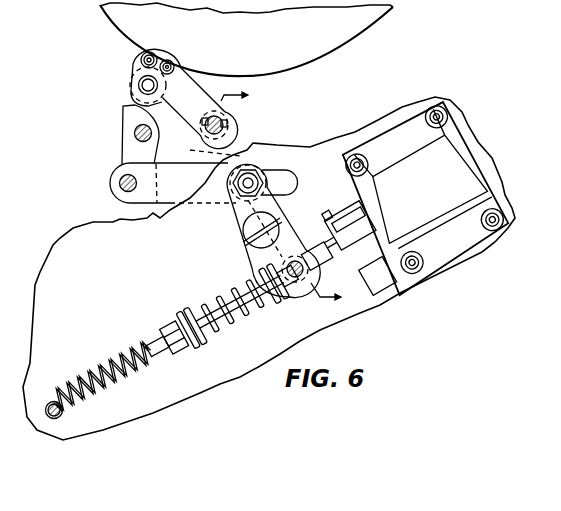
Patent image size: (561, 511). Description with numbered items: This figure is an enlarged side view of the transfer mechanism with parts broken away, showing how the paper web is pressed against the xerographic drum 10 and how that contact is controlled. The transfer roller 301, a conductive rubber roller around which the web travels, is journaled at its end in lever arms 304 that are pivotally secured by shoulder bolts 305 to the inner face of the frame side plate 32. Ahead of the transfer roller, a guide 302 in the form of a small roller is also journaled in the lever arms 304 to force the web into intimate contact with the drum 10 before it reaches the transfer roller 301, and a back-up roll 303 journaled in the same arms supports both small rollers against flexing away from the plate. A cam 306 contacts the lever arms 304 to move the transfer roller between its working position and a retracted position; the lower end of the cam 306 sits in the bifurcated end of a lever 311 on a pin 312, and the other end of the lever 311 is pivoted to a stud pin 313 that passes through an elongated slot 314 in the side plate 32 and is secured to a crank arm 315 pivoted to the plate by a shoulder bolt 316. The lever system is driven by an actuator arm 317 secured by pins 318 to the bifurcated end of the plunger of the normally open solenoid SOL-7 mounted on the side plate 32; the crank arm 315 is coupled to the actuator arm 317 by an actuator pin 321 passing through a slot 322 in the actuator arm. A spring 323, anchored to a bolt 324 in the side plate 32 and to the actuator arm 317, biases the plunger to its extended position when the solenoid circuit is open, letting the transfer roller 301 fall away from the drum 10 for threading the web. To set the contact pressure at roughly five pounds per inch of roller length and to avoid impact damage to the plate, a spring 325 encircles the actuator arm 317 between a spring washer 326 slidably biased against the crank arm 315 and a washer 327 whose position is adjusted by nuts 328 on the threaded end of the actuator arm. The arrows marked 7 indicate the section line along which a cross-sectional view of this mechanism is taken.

The drum 10 is at (383, 14).
The side plate 32 is at (487, 243).
The transfer roller 301 is at (154, 55).
The guide 302 is at (173, 63).
The back-up roll 303 is at (134, 86).
The lever arms 304 is at (191, 94).
The shoulder bolts 305 is at (233, 127).
The cam 306 is at (121, 131).
The lever 311 is at (124, 164).
The pin 312 is at (119, 188).
The stud pin 313 is at (248, 197).
The elongated slot 314 is at (300, 171).
The crank arm 315 is at (232, 214).
The shoulder bolt 316 is at (243, 238).
The actuator arm 317 is at (307, 274).
The pins 318 is at (328, 212).
The actuator pin 321 is at (292, 281).
The slot 322 is at (303, 247).
The spring 323 is at (128, 386).
The bolt 324 is at (52, 402).
The spring 325 is at (226, 320).
The spring washer 326 is at (273, 303).
The washer 327 is at (180, 318).
The nuts 328 is at (184, 347).
The solenoid SOL-7 is at (470, 165).
The section line 7- 7 is at (288, 197).